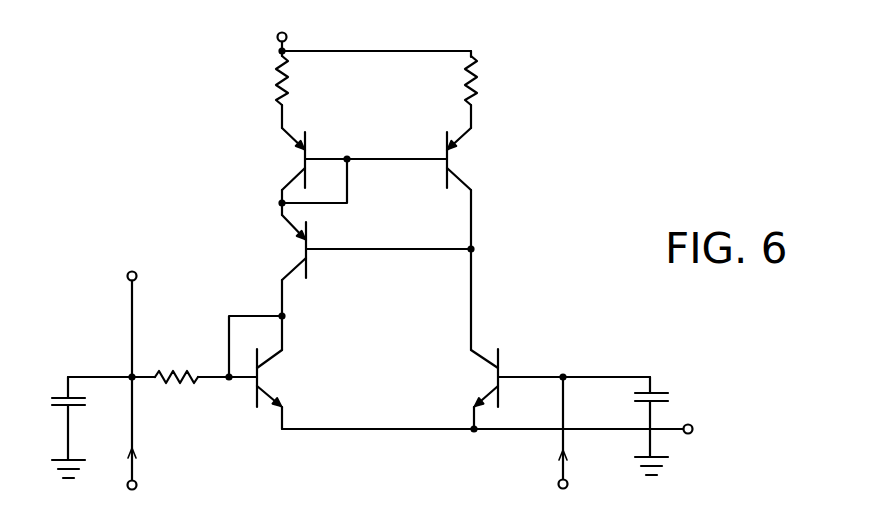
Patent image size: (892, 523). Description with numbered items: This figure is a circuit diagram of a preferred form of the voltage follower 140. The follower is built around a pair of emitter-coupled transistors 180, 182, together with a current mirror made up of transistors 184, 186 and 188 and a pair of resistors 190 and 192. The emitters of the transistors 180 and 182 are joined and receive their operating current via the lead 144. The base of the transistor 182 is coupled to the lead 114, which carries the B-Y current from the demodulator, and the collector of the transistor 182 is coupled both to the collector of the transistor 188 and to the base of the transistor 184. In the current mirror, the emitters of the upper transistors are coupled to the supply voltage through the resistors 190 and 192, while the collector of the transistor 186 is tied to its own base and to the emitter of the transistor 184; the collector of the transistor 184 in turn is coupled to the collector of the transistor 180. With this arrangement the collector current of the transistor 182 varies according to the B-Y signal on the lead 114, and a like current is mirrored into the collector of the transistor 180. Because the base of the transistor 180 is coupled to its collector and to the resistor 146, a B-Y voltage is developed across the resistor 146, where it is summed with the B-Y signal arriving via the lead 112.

The voltage follower 140 is at (545, 192).
The resistor 190 is at (291, 80).
The resistor 192 is at (478, 78).
The transistor 186 is at (301, 160).
The transistor 188 is at (462, 155).
The transistor 184 is at (301, 250).
The transistor 180 is at (270, 378).
The transistor 182 is at (492, 377).
The resistor 146 is at (190, 372).
The lead 112 is at (138, 424).
The lead 114 is at (561, 447).
The lead 144 is at (665, 428).